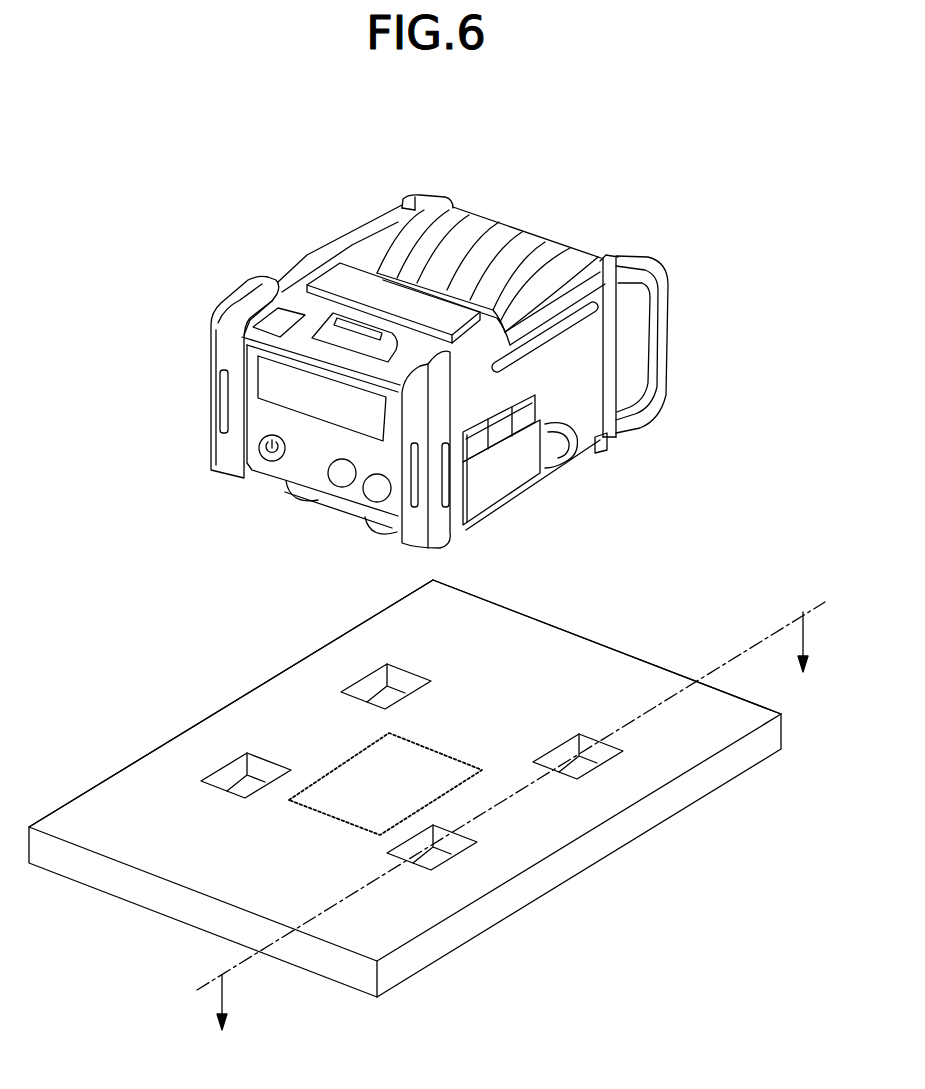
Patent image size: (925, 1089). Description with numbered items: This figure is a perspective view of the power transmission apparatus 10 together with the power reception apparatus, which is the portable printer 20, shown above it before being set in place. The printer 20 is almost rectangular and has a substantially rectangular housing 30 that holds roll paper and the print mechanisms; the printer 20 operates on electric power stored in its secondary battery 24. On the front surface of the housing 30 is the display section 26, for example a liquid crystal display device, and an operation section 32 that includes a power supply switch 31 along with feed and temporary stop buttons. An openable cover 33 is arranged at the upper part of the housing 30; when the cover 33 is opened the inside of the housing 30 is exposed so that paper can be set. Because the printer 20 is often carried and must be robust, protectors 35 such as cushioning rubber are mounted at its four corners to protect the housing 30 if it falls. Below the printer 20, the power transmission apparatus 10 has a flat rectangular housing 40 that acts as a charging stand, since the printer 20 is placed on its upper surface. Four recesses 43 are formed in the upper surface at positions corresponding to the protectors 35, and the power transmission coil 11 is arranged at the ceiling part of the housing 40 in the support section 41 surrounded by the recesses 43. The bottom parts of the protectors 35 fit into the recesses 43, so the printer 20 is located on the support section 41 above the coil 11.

The power transmission apparatus 10 is at (656, 641).
The power transmission coil 11 is at (430, 743).
The portable printer 20 is at (594, 215).
The secondary battery 24 is at (503, 487).
The display section 26 is at (353, 413).
The housing 30 is at (307, 243).
The power supply switch 31 is at (259, 448).
The operation section 32 is at (307, 455).
The cover 33 is at (490, 232).
The protectors 35 is at (433, 194).
The housing 40 is at (543, 623).
The support section 41 is at (338, 747).
The recesses 43 is at (373, 693).